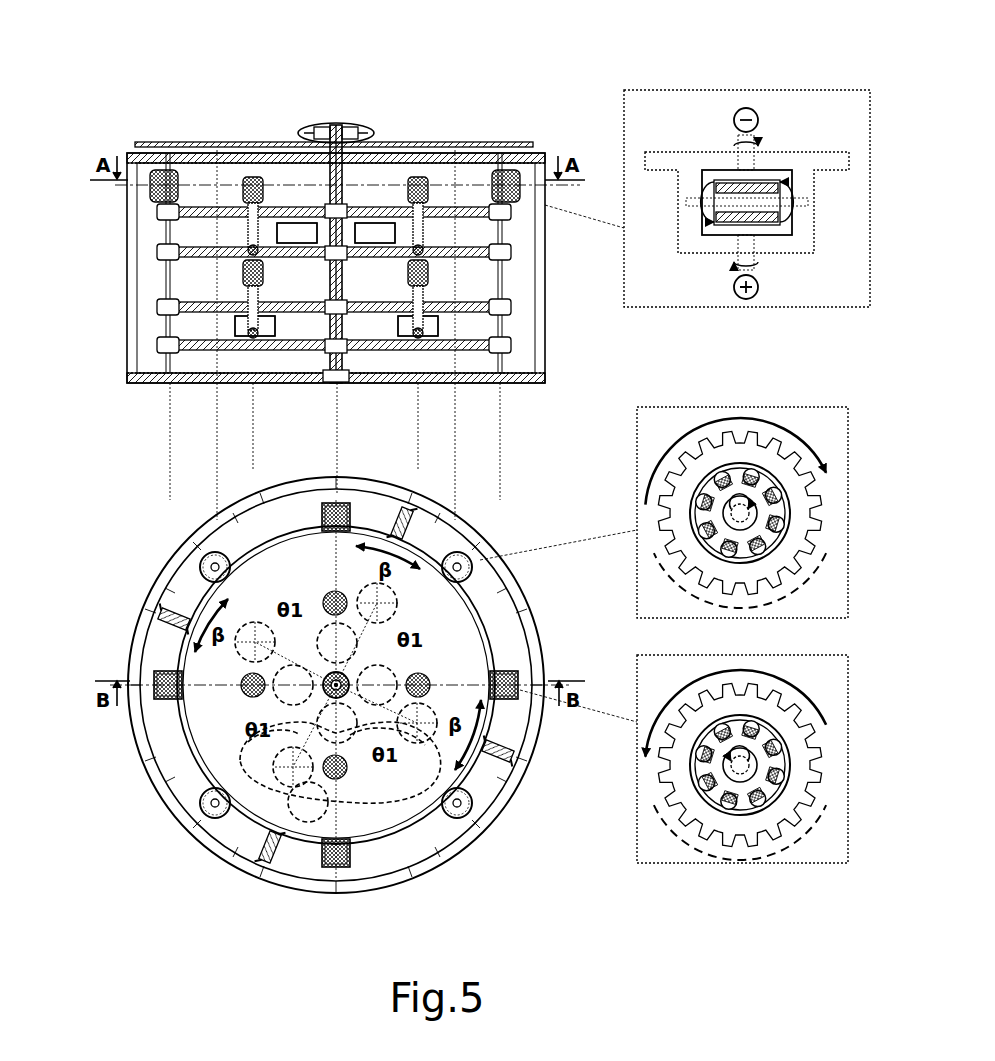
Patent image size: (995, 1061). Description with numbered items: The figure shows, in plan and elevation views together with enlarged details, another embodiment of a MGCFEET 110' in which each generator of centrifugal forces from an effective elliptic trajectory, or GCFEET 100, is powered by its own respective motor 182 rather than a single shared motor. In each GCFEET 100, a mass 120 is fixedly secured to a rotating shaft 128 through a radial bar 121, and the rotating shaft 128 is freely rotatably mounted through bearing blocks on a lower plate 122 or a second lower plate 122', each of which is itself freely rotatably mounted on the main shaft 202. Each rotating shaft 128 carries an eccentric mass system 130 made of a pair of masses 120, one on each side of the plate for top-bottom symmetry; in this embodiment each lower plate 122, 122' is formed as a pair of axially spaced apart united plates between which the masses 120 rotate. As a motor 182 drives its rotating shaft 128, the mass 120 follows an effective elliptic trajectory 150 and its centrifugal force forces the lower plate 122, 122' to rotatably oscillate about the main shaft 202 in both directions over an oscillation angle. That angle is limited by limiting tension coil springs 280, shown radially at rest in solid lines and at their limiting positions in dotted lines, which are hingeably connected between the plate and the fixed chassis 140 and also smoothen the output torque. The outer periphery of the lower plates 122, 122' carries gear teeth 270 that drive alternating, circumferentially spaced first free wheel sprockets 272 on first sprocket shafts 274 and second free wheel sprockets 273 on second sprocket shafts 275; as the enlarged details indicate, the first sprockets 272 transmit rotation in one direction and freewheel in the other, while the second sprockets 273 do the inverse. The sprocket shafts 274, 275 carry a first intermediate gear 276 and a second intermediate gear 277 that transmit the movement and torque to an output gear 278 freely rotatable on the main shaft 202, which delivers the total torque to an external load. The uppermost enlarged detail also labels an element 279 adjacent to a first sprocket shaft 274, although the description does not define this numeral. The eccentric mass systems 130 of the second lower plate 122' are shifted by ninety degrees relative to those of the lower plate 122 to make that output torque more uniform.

The generator of centrifugal forces from an effective elliptic trajectory (GCFEET) 100 is at (522, 240).
The MGCFEET 110' is at (363, 285).
The mass 120 is at (282, 352).
The radial bar 121 is at (372, 350).
The lower plate 122 is at (268, 505).
The second lower plate 122' is at (267, 562).
The rotating shaft 128 is at (455, 345).
The eccentric mass system 130 is at (290, 395).
The fixed chassis 140 is at (135, 392).
The effective elliptic trajectory 150 is at (350, 868).
The motor 182 is at (342, 200).
The main shaft 202 is at (356, 128).
The gear teeth 270 is at (236, 788).
The first free wheel sprocket 272 is at (160, 212).
The second free wheel sprocket 273 is at (230, 385).
The first sprocket shaft 274 is at (512, 358).
The second sprocket shaft 275 is at (770, 550).
The first intermediate gear 276 is at (150, 141).
The second intermediate gear 277 is at (216, 148).
The output gear 278 is at (262, 140).
The motor 279 is at (150, 185).
The limiting tension coil spring 280 is at (258, 845).